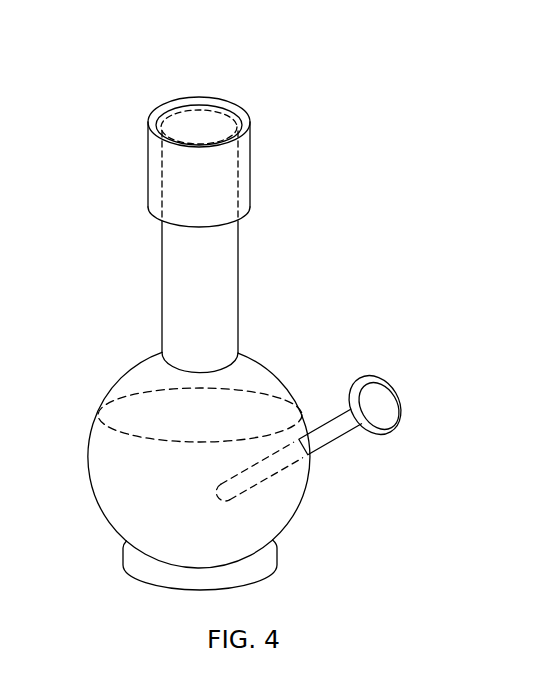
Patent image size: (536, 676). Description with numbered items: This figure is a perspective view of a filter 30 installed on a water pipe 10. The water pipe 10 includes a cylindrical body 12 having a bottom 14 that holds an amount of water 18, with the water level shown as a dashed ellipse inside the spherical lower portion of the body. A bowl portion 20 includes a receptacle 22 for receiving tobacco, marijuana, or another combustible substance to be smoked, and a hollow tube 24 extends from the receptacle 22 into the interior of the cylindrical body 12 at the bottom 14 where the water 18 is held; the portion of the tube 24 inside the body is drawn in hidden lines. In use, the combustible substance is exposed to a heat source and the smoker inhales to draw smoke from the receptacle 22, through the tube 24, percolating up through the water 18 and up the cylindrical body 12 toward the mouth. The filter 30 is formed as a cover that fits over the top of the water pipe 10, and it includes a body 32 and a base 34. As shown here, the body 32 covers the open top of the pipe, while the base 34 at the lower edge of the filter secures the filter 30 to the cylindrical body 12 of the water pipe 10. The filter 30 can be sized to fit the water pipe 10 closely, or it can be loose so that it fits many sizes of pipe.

The water pipe 10 is at (88, 365).
The cylindrical body 12 is at (238, 285).
The bottom 14 is at (277, 538).
The water 18 is at (213, 425).
The bowl portion 20 is at (404, 378).
The receptacle 22 is at (401, 430).
The hollow tube 24 is at (334, 446).
The filter 30 is at (262, 62).
The body 32 is at (249, 184).
The base 34 is at (247, 213).